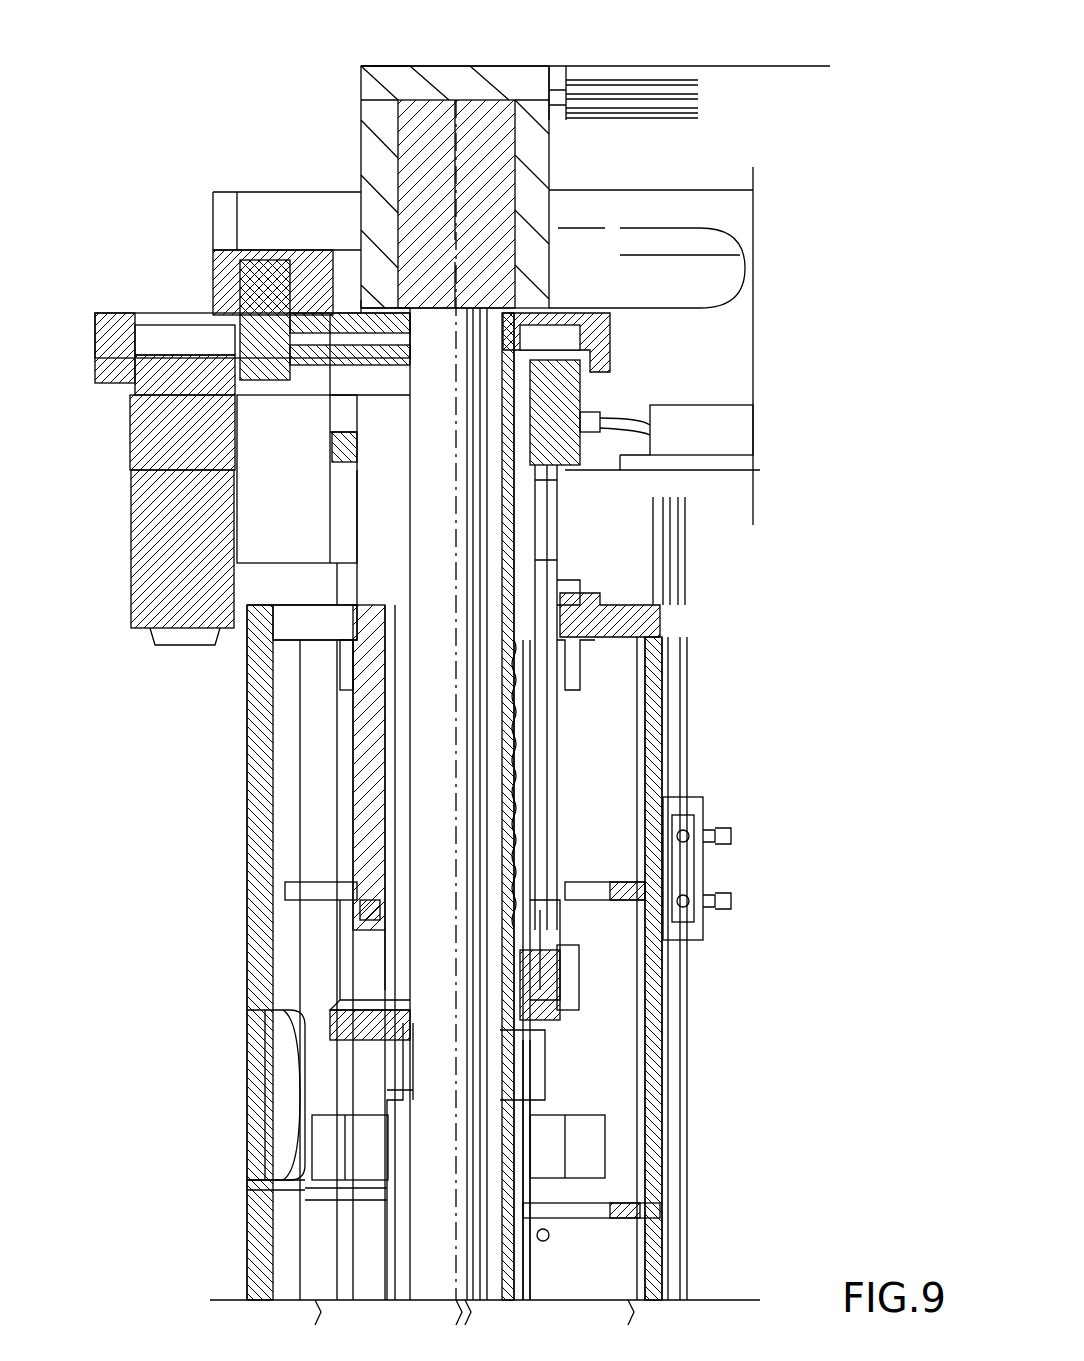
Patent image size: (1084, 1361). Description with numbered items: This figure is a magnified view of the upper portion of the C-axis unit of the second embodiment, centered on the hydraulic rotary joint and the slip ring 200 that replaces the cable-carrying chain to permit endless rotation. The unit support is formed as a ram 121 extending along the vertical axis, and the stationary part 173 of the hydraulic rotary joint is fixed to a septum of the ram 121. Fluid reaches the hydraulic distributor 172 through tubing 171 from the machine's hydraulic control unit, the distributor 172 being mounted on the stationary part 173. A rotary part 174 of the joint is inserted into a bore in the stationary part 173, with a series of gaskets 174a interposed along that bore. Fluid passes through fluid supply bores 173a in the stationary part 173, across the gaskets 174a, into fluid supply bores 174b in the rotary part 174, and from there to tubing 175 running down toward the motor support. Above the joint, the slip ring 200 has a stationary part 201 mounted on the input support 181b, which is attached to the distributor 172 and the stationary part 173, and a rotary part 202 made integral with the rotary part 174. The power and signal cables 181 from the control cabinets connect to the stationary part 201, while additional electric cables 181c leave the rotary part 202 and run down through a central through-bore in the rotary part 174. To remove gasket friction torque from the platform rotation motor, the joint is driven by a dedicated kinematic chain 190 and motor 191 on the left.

The slip ring 200 is at (330, 92).
The rotary part of the slip ring 202 is at (430, 140).
The stationary part of the slip ring 201 is at (510, 75).
The power and signal cables 181 is at (650, 85).
The kinematic chain 190 is at (355, 305).
The input support 181b is at (370, 310).
The motor 191 is at (130, 548).
The hydraulic distributor 172 is at (590, 385).
The tubing 171 is at (620, 415).
The gaskets 174a is at (525, 505).
The additional electric cables 181c is at (690, 545).
The stationary part of the hydraulic rotary joint 173 is at (560, 600).
The rotary part of the rotary joint 174 is at (565, 640).
The fluid supply bores 173a is at (665, 797).
The fluid supply bores 174b is at (555, 880).
The unit support (ram) 121 is at (232, 1143).
The tubing 175 is at (540, 1208).